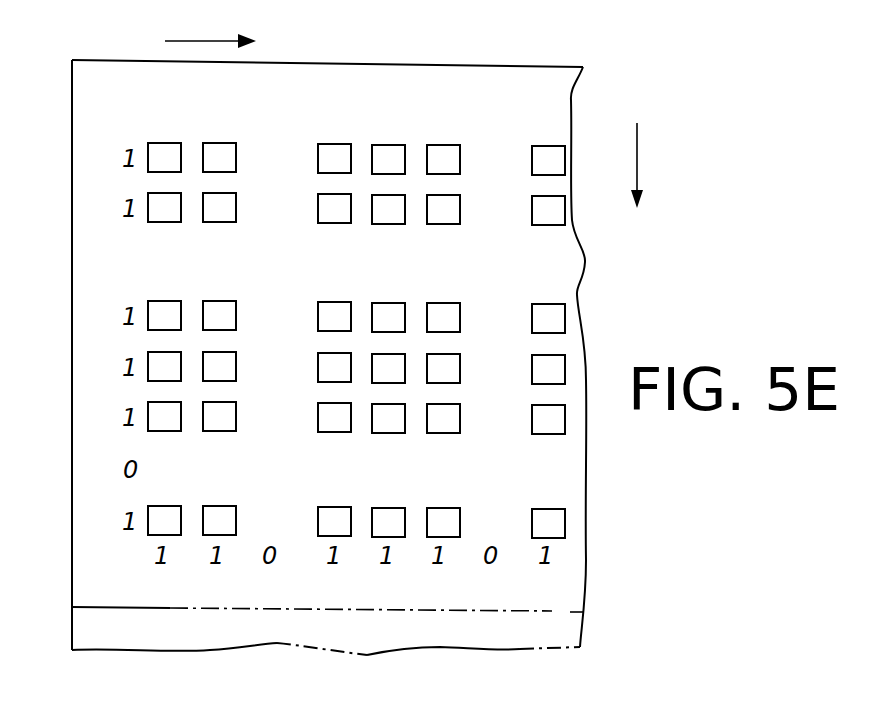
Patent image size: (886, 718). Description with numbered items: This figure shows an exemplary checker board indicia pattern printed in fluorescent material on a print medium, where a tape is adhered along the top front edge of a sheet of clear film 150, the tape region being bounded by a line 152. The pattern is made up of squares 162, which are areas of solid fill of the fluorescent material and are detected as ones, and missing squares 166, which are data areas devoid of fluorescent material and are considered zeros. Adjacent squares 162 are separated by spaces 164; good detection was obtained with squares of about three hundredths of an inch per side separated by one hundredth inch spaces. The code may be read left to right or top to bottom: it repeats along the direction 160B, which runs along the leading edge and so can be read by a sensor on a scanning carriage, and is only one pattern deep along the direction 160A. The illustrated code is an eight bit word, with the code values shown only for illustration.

The substrate / film strip 150 is at (272, 652).
The boundary line 152 is at (172, 605).
The direction 160A is at (640, 152).
The direction 160B is at (166, 40).
The squares 162 is at (166, 142).
The spaces 164 is at (191, 150).
The missing squares 166 is at (165, 258).